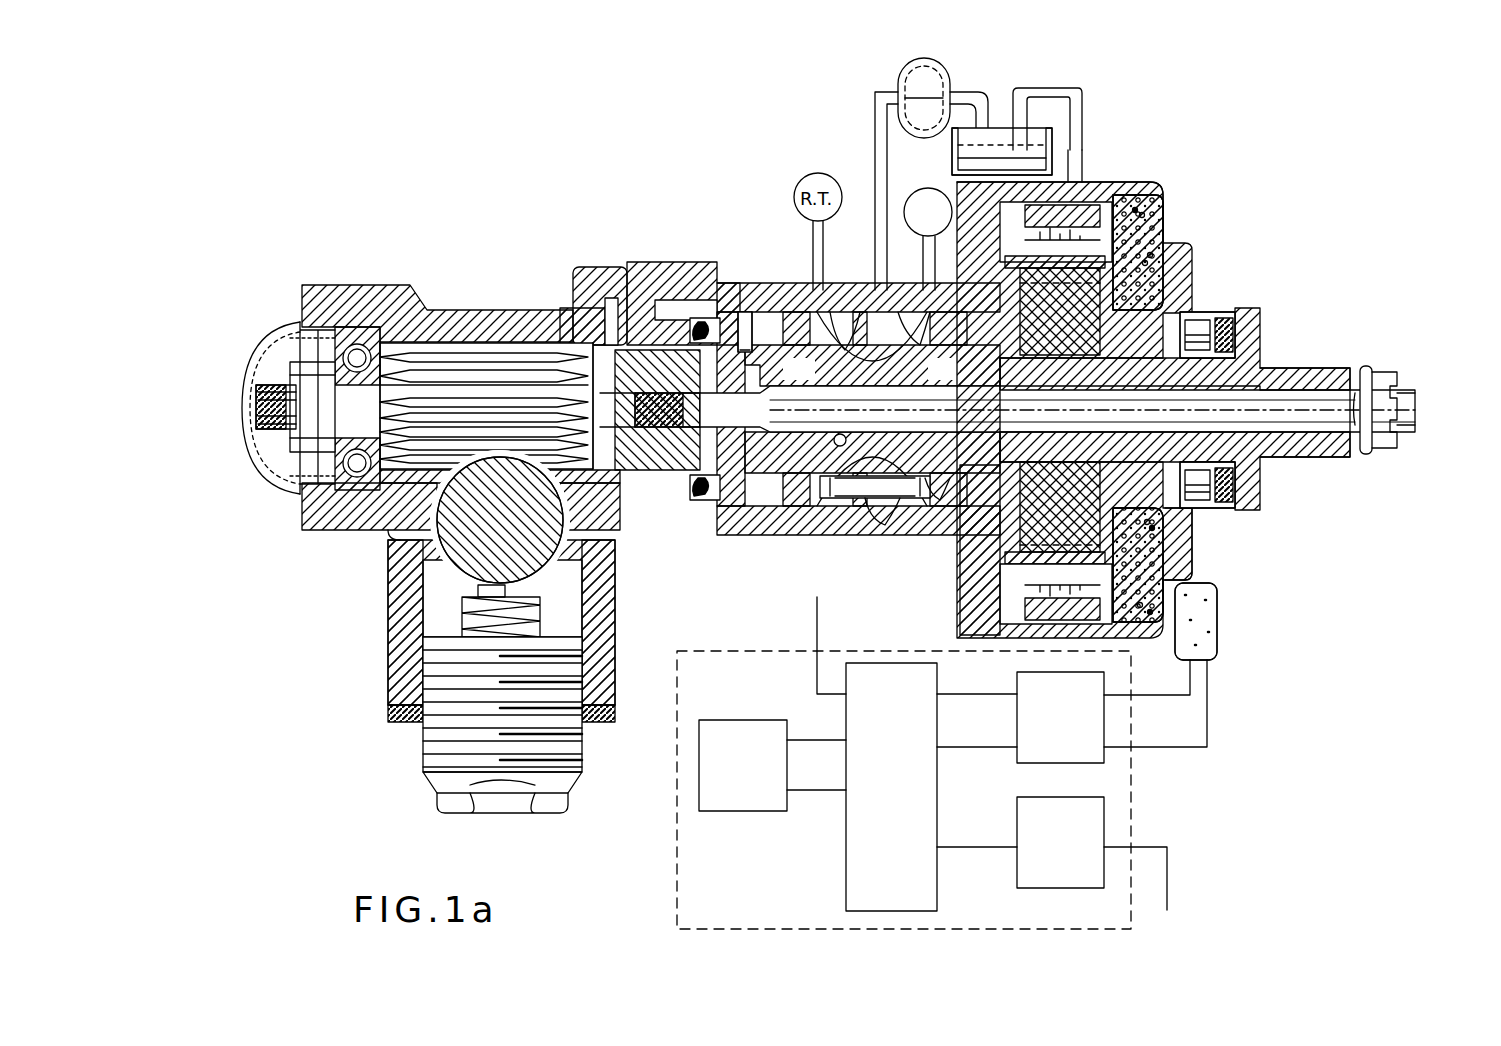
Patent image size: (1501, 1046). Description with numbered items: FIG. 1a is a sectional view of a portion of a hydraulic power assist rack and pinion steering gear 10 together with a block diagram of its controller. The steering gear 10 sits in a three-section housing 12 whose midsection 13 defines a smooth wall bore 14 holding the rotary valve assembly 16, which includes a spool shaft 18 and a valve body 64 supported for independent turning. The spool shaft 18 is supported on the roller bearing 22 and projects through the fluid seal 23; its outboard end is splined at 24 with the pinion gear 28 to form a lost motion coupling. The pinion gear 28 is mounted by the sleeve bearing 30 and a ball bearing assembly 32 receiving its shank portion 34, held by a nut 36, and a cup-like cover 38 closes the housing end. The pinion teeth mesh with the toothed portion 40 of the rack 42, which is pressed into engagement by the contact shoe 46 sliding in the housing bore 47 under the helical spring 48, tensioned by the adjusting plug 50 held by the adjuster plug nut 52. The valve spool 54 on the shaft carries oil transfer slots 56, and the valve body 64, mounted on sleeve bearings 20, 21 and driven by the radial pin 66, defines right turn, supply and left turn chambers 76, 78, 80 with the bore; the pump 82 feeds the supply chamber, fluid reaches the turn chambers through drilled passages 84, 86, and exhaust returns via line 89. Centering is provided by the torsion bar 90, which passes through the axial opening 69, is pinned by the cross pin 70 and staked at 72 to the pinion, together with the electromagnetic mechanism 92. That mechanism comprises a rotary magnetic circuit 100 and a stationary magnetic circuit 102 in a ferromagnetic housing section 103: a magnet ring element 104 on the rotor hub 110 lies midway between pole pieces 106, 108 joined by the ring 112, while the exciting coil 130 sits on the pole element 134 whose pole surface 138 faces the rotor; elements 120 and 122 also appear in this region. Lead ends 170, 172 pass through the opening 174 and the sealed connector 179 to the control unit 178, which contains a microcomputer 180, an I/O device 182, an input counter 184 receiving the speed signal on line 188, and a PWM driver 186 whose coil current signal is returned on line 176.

The steering gear 10 is at (745, 165).
The housing 12 is at (692, 232).
The midsection 13 is at (735, 283).
The bore 14 is at (818, 505).
The power steering gear valve assembly 16 is at (753, 500).
The spool shaft 18 is at (1336, 362).
The sleeve bearing 20 is at (748, 315).
The sleeve bearing 21 is at (1020, 470).
The roller bearing 22 is at (1200, 340).
The fluid seal 23 is at (1235, 340).
The splined connection 24 is at (750, 500).
The pinion gear 28 is at (490, 347).
The sleeve bearing 30 is at (628, 298).
The ball bearing assembly 32 is at (368, 512).
The shank portion 34 is at (343, 403).
The nut 36 is at (300, 378).
The cover 38 is at (252, 465).
The toothed portion 40 is at (447, 548).
The rack 42 is at (410, 588).
The rack contact shoe 46 is at (412, 618).
The housing bore 47 is at (590, 565).
The helical spring 48 is at (560, 610).
The adjusting plug 50 is at (445, 752).
The adjuster plug nut 52 is at (390, 716).
The valve spool 54 is at (845, 312).
The oil transfer slots 56 is at (885, 510).
The valve body 64 is at (940, 505).
The radial pin 66 is at (1075, 150).
The axial opening 69 is at (840, 446).
The cross pin 70 is at (1366, 368).
The splined and staked connection 72 is at (650, 410).
The right turn chamber 76 is at (778, 345).
The supply chamber 78 is at (915, 312).
The left turn chamber 80 is at (922, 272).
The hydraulic pump 82 is at (898, 90).
The drilled passage 84 is at (800, 369).
The drilled passage 86 is at (944, 369).
The line 89 is at (1082, 100).
The torsion bar 90 is at (1268, 405).
The electromagnetic mechanism 92 is at (1183, 158).
The rotary magnetic circuit 100 is at (975, 560).
The stationary magnetic circuit 102 is at (1185, 560).
The ferromagnetic housing section 103 is at (1128, 182).
The permanent magnet ring element 104 is at (1100, 270).
The pole piece 106 is at (1135, 355).
The pole piece 108 is at (1105, 205).
The rotor hub 110 is at (1020, 612).
The ring 112 is at (1160, 250).
The magnet 120 is at (1168, 540).
The sensor element 122 is at (1175, 590).
The exciting coil 130 is at (1148, 220).
The pole element 134 is at (1160, 262).
The pole surface 138 is at (1160, 508).
The lead end 170 is at (1145, 698).
The lead end 172 is at (1165, 750).
The opening 174 is at (1188, 623).
The line 176 is at (817, 600).
The control unit 178 is at (1130, 827).
The sealed connector 179 is at (1210, 648).
The microcomputer 180 is at (740, 811).
The input/output device 182 is at (855, 866).
The input counter 184 is at (1020, 868).
The PWM driver 186 is at (1020, 756).
The line 188 is at (1168, 885).